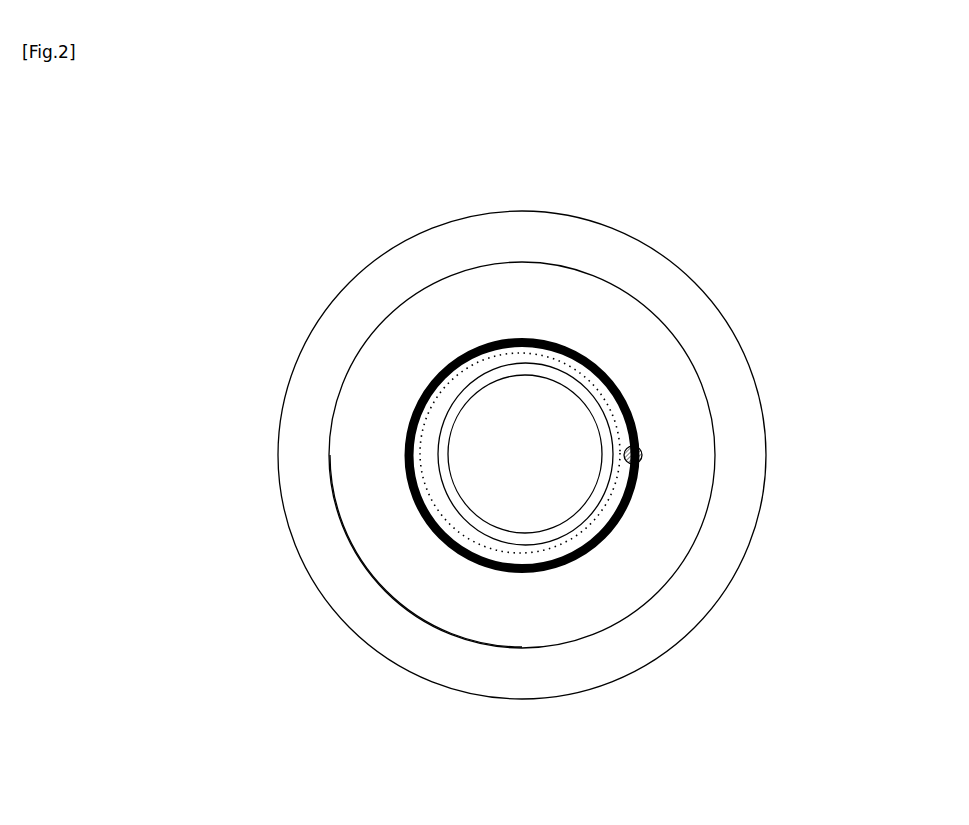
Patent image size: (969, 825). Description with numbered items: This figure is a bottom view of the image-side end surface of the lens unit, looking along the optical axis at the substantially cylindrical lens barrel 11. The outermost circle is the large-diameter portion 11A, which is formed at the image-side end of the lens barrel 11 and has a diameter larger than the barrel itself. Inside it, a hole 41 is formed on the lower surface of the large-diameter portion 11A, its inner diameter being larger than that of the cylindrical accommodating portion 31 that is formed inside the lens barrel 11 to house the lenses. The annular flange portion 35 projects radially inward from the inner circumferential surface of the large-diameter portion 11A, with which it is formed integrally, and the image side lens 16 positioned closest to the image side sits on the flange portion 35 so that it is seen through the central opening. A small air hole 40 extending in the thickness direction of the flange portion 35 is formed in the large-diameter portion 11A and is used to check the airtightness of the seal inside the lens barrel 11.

The lens barrel 11 is at (687, 352).
The large-diameter portion 11A is at (770, 472).
The image side lens 16 is at (497, 435).
The accommodating portion 31 is at (540, 393).
The flange portion 35 is at (608, 505).
The air hole 40 is at (642, 452).
The hole 41 is at (363, 537).